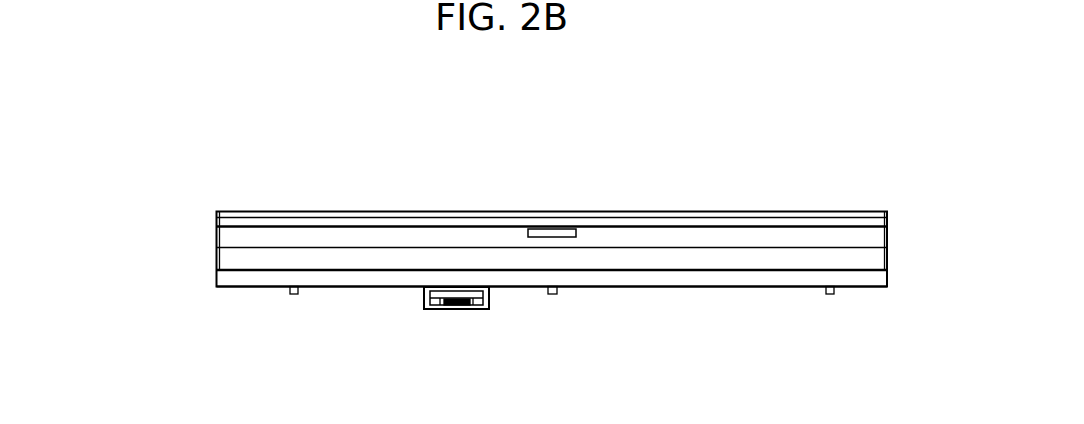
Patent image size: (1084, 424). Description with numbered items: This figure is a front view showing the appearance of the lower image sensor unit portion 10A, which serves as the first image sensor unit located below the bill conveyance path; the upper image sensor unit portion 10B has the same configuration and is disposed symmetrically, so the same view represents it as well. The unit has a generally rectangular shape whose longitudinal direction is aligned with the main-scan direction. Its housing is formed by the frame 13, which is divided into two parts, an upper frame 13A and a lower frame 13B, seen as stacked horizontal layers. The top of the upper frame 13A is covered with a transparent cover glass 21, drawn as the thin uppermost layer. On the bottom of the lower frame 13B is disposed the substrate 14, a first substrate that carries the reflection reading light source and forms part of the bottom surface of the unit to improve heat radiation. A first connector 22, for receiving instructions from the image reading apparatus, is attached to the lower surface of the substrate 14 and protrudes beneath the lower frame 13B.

The lower image sensor unit portion 10A is at (624, 134).
The upper image sensor unit portion 10B is at (552, 249).
The frame 13 is at (485, 257).
The upper frame 13A is at (217, 238).
The lower frame 13B is at (227, 250).
The substrate 14 is at (333, 279).
The cover glass 21 is at (313, 211).
The first connector 22 is at (453, 309).